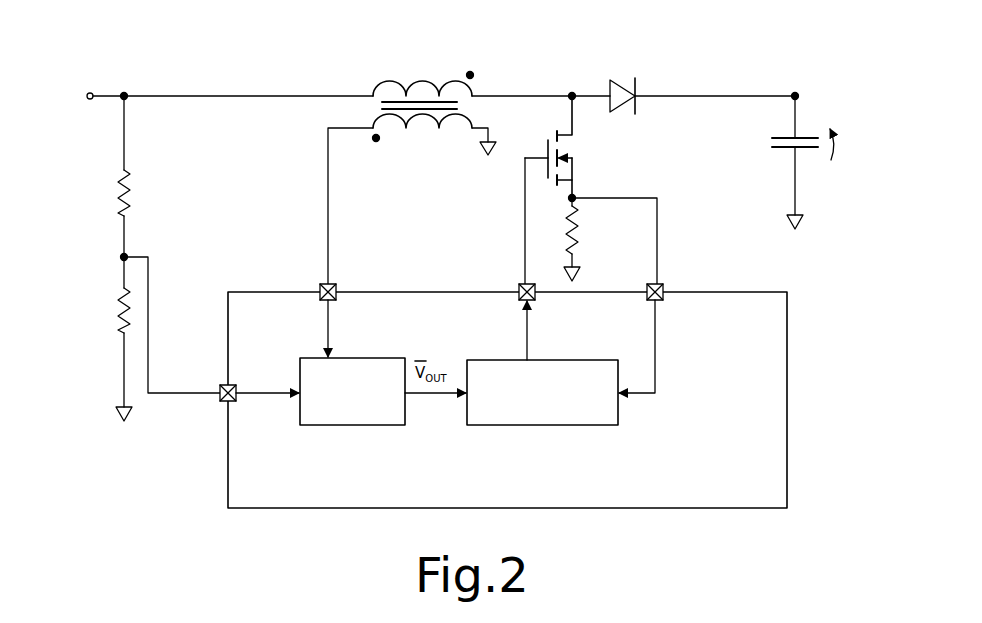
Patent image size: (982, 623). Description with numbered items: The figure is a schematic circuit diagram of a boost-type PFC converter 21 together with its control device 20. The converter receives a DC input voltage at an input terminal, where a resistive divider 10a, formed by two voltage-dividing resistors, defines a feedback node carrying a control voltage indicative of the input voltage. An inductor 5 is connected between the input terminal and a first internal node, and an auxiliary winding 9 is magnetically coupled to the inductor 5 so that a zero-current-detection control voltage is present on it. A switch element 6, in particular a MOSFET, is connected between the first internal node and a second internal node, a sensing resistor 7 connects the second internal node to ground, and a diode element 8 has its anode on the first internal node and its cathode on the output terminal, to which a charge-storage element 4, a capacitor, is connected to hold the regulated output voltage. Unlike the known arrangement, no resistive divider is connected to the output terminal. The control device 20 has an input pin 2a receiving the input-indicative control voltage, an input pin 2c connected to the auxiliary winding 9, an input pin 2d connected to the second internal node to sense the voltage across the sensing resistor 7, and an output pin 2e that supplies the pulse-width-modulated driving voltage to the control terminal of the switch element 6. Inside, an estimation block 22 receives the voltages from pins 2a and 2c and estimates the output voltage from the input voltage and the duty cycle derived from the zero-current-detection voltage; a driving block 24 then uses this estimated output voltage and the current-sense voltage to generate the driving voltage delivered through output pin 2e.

The PFC converter 21 is at (252, 86).
The resistive divider 10a is at (113, 262).
The inductor 5 is at (388, 79).
The auxiliary winding 9 is at (406, 124).
The diode element 8 is at (613, 81).
The switch element 6 is at (562, 154).
The sensing resistor 7 is at (582, 232).
The charge-storage element 4 is at (806, 149).
The control device 20 is at (778, 408).
The input pin 2a is at (223, 400).
The input pin 2c is at (337, 287).
The output pin 2e is at (519, 288).
The input pin 2d is at (647, 298).
The estimation block 22 is at (346, 428).
The driving block 24 is at (573, 428).